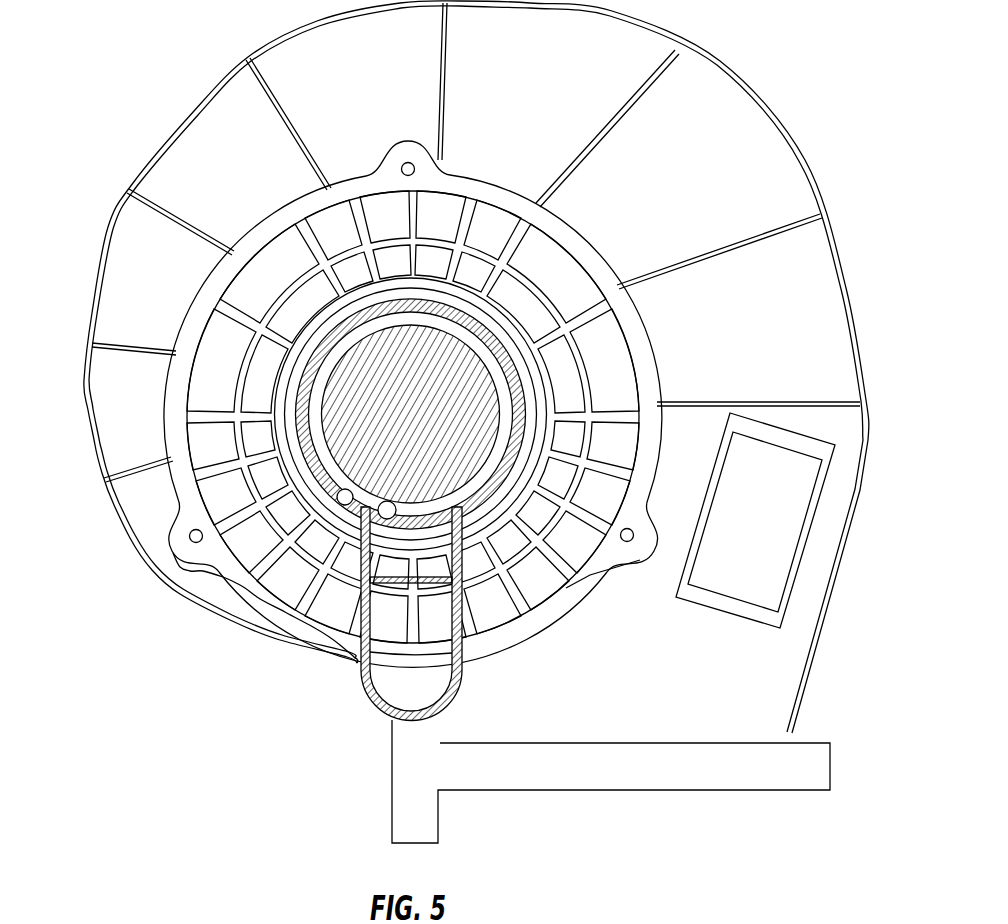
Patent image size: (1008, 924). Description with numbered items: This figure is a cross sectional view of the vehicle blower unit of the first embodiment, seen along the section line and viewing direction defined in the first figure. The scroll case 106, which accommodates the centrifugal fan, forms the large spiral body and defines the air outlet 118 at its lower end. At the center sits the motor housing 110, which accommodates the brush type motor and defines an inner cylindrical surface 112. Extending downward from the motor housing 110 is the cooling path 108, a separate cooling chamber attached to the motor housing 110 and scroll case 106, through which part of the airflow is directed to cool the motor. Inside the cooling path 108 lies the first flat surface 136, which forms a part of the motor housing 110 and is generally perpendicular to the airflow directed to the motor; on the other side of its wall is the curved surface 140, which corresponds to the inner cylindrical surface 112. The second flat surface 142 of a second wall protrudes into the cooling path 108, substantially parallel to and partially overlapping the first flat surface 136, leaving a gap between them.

The scroll case 106 is at (102, 473).
The cooling path 108 is at (377, 711).
The motor housing 110 is at (177, 576).
The inner cylindrical surface 112 is at (237, 613).
The air outlet 118 is at (780, 792).
The first flat surface 136 is at (426, 527).
The curved surface 140 is at (358, 523).
The second flat surface 142 is at (400, 568).